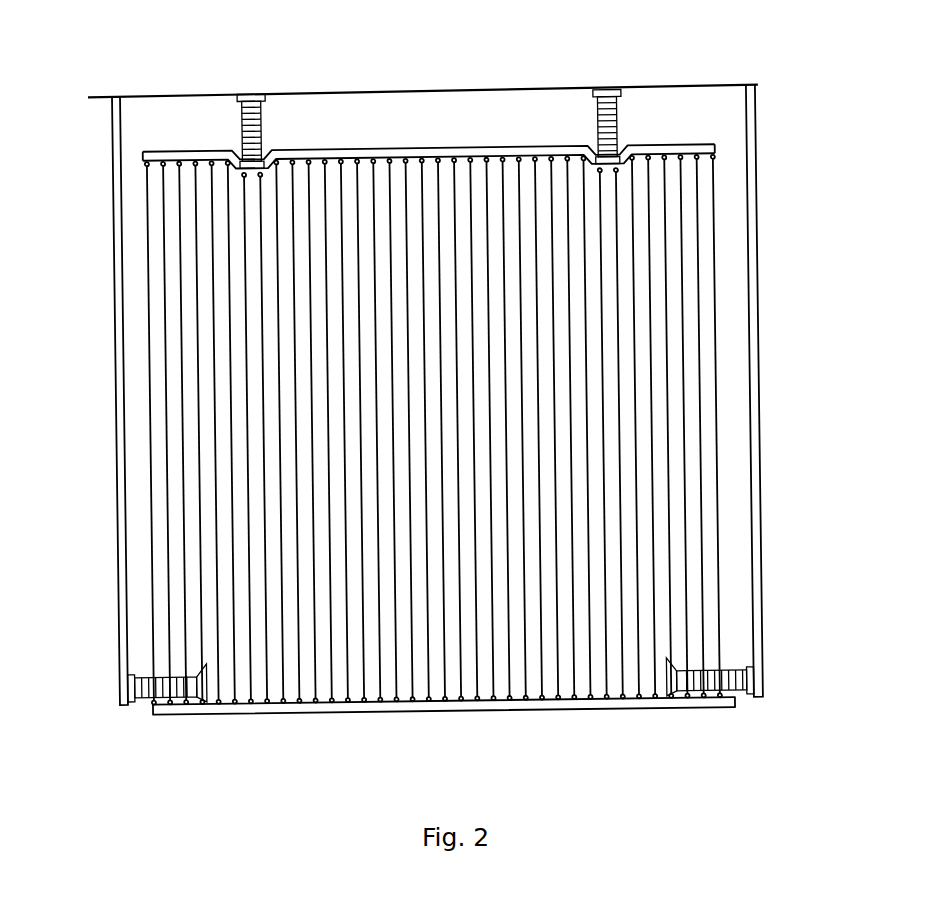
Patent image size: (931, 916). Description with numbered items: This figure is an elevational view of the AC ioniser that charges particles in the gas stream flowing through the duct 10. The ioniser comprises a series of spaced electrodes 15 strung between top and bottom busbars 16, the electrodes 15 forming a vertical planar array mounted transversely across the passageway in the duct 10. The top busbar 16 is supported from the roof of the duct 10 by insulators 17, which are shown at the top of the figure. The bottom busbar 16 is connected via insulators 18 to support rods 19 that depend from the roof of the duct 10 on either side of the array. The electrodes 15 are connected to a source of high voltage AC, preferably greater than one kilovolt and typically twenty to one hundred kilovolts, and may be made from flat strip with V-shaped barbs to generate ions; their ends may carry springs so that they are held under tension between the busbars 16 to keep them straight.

The duct 10 is at (152, 78).
The electrodes 15 is at (150, 323).
The busbars 16 is at (158, 153).
The insulators 17 is at (265, 125).
The insulators 18 is at (150, 680).
The support rods 19 is at (117, 473).